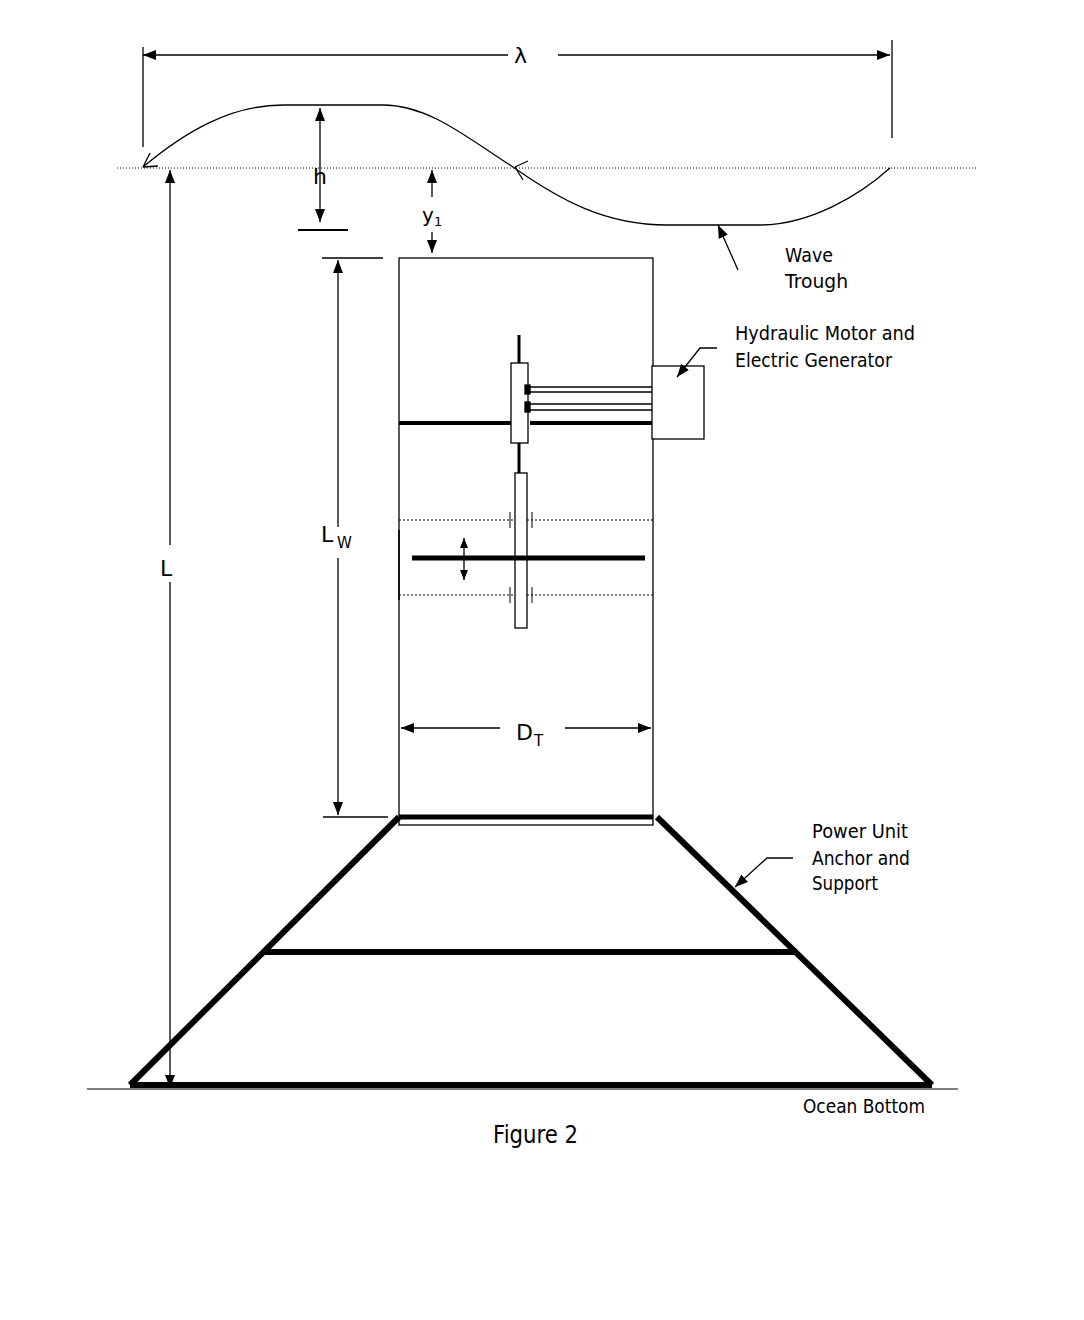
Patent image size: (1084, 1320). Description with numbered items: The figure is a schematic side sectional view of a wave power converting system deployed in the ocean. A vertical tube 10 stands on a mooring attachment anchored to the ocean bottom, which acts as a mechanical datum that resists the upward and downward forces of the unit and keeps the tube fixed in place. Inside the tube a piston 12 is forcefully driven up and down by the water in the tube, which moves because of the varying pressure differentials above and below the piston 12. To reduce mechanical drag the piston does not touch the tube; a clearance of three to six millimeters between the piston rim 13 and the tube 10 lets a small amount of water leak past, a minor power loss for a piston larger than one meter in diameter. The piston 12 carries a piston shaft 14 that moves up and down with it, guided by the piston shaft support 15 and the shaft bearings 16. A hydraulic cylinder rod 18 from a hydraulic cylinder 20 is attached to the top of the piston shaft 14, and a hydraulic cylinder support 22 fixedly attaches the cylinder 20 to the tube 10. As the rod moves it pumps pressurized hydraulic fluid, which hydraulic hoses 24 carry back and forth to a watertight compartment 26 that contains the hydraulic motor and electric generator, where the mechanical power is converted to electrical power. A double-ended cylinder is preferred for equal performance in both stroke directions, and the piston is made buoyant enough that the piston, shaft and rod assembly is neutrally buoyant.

The tube 10 is at (653, 767).
The piston 12 is at (610, 547).
The piston rim 13 is at (403, 565).
The piston shaft 14 is at (527, 573).
The piston shaft support 15 is at (590, 598).
The shaft bearings 16 is at (532, 608).
The hydraulic cylinder rod 18 is at (517, 460).
The hydraulic cylinder 20 is at (512, 375).
The hydraulic cylinder support 22 is at (470, 423).
The hydraulic hoses 24 is at (617, 412).
The watertight compartment 26 is at (583, 319).